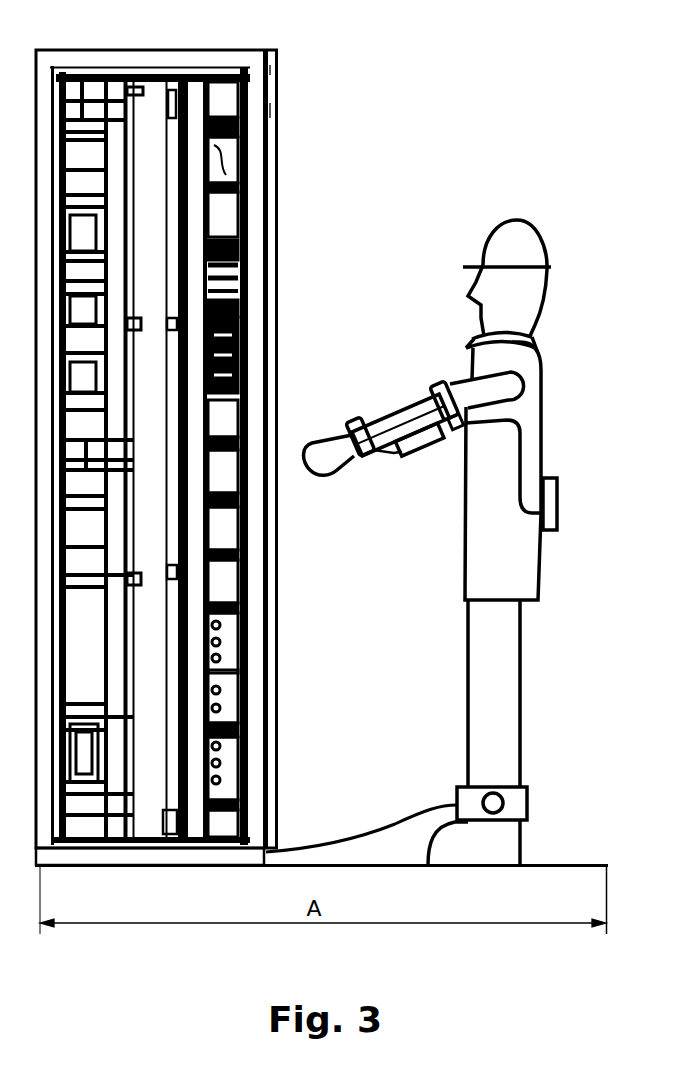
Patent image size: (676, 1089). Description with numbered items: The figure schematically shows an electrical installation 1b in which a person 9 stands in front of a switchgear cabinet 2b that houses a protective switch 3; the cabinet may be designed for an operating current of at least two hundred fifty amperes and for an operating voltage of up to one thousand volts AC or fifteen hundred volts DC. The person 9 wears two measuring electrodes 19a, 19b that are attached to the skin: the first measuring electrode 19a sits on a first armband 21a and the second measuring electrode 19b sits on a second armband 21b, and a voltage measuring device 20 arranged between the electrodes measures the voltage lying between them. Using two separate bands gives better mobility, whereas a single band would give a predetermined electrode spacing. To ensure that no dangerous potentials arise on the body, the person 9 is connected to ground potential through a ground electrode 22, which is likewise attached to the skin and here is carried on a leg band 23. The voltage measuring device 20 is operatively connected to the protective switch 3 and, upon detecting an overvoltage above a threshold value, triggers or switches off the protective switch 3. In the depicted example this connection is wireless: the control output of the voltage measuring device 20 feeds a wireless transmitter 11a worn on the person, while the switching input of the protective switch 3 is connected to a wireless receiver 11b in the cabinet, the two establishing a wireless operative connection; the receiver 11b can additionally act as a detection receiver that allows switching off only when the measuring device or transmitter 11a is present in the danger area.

The electrical installation 1b is at (472, 93).
The switchgear cabinet 2b is at (261, 93).
The protective switch 3 is at (228, 765).
The person 9 is at (527, 303).
The wireless transmitter 11a is at (558, 497).
The wireless receiver 11b is at (230, 713).
The first measuring electrode 19a is at (357, 463).
The second measuring electrode 19b is at (437, 392).
The voltage measuring device 20 is at (420, 448).
The first armband 21a is at (359, 430).
The second armband 21b is at (442, 387).
The ground electrode 22 is at (503, 807).
The leg band 23 is at (517, 800).